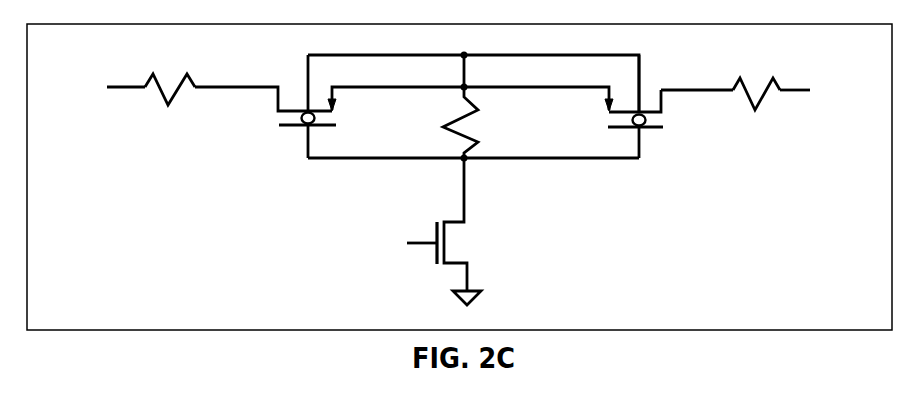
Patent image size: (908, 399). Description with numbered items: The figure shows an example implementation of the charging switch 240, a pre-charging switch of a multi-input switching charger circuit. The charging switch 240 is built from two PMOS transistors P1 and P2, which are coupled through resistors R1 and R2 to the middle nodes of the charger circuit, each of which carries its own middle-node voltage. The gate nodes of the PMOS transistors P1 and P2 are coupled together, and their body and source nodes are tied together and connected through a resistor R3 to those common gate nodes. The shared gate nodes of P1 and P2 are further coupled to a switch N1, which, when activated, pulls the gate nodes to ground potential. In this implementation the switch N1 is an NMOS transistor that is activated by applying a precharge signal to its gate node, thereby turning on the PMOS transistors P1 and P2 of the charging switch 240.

The charging switch 240 is at (863, 312).
The resistor R1 is at (170, 83).
The resistor R2 is at (756, 89).
The resistor R3 is at (472, 106).
The PMOS transistor P1 is at (308, 106).
The PMOS transistor P2 is at (638, 106).
The switch N1 is at (444, 231).